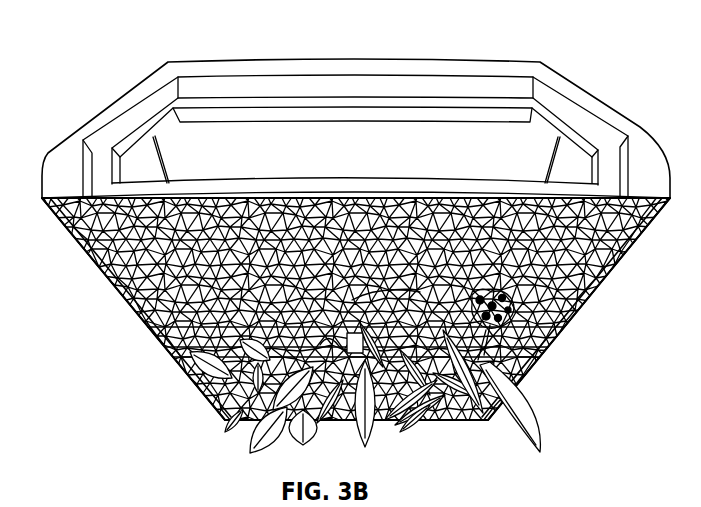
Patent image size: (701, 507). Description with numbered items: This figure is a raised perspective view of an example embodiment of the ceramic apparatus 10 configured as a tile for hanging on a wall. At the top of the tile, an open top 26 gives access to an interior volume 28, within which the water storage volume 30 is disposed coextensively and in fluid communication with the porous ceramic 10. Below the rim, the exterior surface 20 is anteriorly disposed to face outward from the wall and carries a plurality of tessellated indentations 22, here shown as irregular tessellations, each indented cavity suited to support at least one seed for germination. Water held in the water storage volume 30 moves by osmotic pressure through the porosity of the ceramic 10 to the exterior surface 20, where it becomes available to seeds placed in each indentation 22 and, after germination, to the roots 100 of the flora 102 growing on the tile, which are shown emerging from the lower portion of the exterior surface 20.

The ceramic apparatus 10 is at (356, 221).
The exterior surface 20 is at (118, 282).
The tessellated indentations 22 is at (582, 302).
The open top 26 is at (110, 105).
The interior volume 28 is at (238, 110).
The water storage volume 30 is at (357, 136).
The roots 100 is at (405, 371).
The flora 102 is at (525, 412).